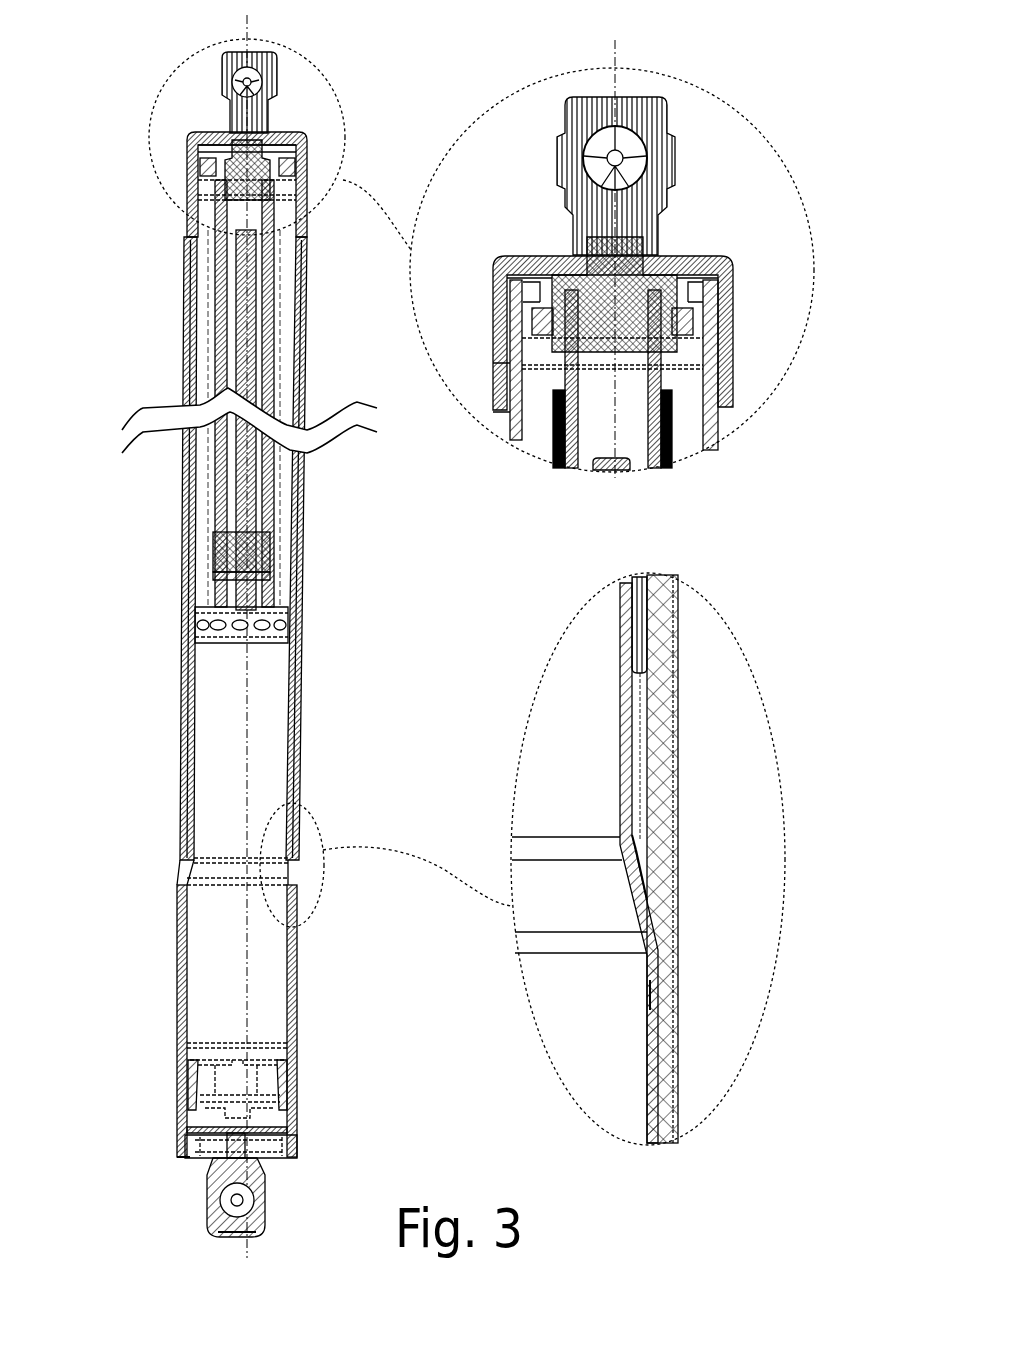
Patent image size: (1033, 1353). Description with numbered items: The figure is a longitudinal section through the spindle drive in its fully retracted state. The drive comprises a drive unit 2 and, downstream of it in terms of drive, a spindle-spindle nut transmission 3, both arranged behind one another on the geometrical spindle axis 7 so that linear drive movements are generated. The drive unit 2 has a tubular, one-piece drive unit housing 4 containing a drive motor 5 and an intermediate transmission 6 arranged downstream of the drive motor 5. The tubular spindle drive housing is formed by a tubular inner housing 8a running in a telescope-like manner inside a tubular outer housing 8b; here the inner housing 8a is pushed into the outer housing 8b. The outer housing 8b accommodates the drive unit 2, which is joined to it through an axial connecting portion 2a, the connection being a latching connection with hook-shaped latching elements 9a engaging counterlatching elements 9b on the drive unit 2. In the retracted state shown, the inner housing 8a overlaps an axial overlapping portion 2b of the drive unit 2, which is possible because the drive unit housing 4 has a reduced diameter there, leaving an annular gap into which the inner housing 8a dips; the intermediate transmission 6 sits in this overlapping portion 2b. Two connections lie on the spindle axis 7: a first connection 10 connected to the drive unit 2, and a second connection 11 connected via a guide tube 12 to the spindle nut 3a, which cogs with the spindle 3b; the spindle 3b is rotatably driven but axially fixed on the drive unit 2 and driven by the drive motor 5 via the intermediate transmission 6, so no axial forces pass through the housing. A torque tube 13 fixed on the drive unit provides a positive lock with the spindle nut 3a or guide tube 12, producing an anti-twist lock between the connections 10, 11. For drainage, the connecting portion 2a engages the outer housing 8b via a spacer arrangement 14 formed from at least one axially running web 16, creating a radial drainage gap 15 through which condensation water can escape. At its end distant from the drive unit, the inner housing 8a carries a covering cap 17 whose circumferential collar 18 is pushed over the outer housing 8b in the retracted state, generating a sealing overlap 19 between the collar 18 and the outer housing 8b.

The drive unit 2 is at (157, 856).
The axial connecting portion 2a is at (333, 880).
The axial overlapping portion 2b is at (333, 605).
The spindle-spindle nut transmission 3 is at (205, 568).
The spindle nut 3a is at (270, 547).
The spindle 3b is at (255, 478).
The drive unit housing 4 is at (195, 985).
The drive motor 5 is at (220, 1015).
The intermediate transmission 6 is at (215, 746).
The geometrical spindle axis 7 is at (232, 1255).
The inner housing 8a is at (290, 345).
The outer housing 8b is at (300, 297).
The hook-shaped latching elements 9a is at (275, 1160).
The counterlatching elements 9b is at (280, 1150).
The first connection 10 is at (210, 1188).
The second connection 11 is at (232, 70).
The guide tube 12 is at (235, 226).
The torque tube 13 is at (270, 588).
The spacer arrangement 14 is at (636, 836).
The radial drainage gap 15 is at (673, 992).
The web 16 is at (635, 862).
The covering cap 17 is at (305, 128).
The circumferential collar 18 is at (305, 157).
The overlap 19 is at (490, 363).